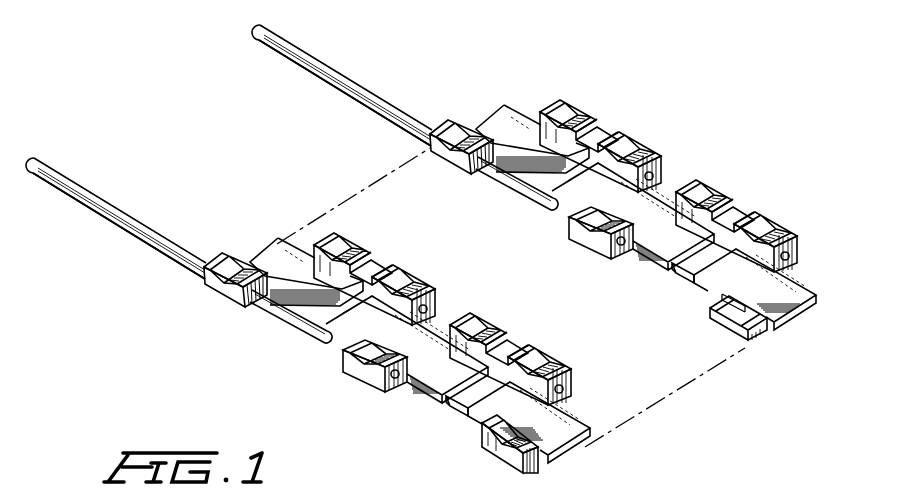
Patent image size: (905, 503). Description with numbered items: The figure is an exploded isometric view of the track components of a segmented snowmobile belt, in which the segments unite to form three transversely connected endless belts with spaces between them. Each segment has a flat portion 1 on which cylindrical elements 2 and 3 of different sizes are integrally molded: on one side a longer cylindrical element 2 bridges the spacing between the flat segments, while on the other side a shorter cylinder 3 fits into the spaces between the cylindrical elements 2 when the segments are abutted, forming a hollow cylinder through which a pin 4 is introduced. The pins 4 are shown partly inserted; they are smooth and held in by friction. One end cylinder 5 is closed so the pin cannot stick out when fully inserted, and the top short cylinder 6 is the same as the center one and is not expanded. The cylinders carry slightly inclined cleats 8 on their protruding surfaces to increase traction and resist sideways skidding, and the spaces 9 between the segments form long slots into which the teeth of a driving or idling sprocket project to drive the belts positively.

The flat portion 1 is at (513, 410).
The cylindrical element 2 is at (373, 250).
The shorter cylinder 3 is at (358, 367).
The pin 4 is at (157, 227).
The end cylinder 5 is at (508, 453).
The top short cylinder 6 is at (235, 297).
The cleat 8 is at (230, 252).
The space 9 is at (482, 393).